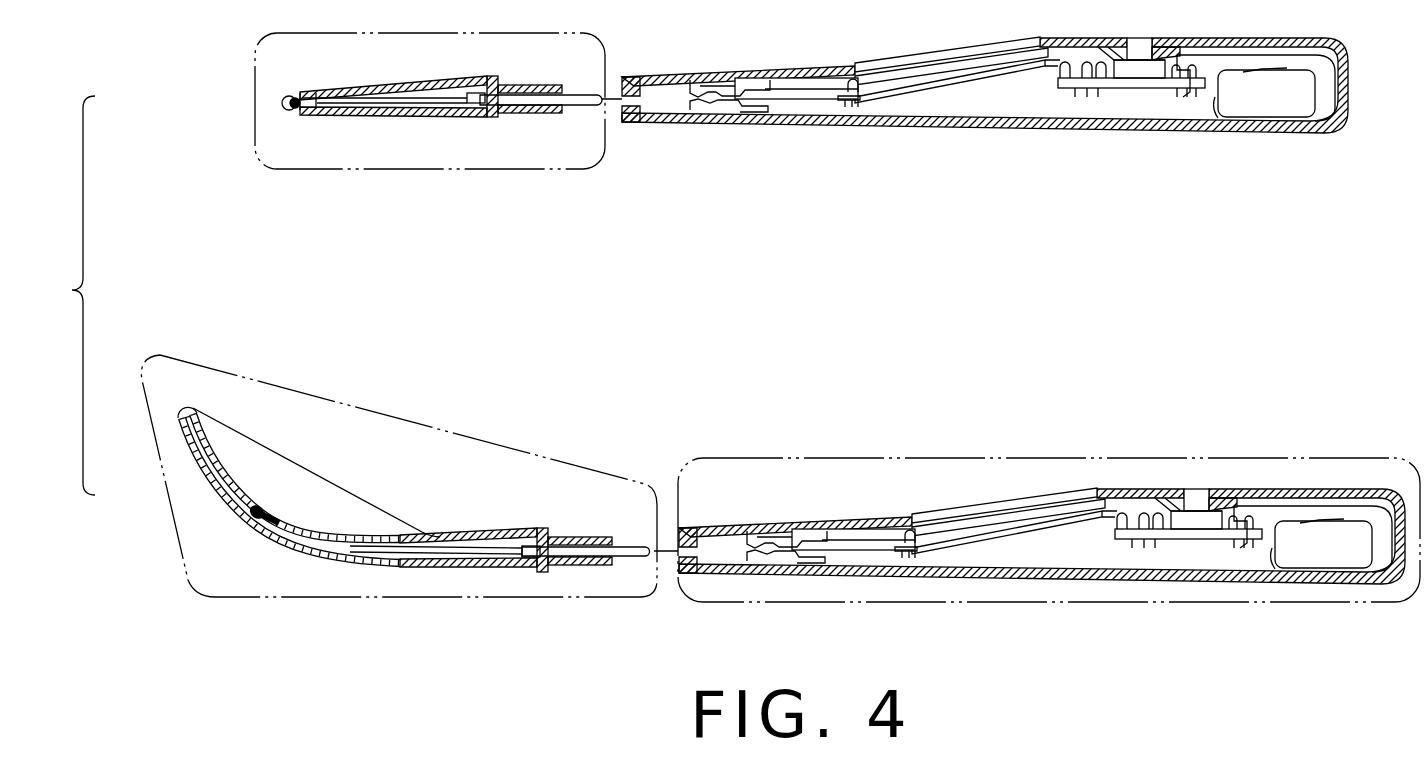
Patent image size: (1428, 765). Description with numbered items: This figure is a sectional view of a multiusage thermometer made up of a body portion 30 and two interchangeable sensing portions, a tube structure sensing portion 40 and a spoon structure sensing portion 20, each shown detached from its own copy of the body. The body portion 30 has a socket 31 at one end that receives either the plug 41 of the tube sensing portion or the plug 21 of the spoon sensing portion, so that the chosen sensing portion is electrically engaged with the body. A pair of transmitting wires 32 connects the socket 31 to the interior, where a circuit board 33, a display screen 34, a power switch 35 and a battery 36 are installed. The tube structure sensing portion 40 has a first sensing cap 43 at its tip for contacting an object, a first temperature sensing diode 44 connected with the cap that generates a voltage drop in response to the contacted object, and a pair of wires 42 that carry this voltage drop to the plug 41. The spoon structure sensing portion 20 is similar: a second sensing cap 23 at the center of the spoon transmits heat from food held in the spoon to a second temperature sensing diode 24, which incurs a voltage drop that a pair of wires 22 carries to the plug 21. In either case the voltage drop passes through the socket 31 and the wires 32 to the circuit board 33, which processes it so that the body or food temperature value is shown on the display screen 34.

The spoon structure sensing portion 20 is at (457, 422).
The plug 21 is at (634, 548).
The pair of wires 22 is at (466, 552).
The second sensing cap 23 is at (278, 512).
The second temperature sensing diode 24 is at (246, 514).
The body portion 30 is at (1050, 462).
The socket 31 is at (838, 513).
The transmitting wires 32 is at (803, 556).
The circuit board 33 is at (1188, 588).
The display screen 34 is at (1008, 508).
The power switch 35 is at (1187, 469).
The battery 36 is at (1321, 583).
The tube structure sensing portion 40 is at (491, 170).
The plug 41 is at (578, 103).
The pair of wires 42 is at (378, 101).
The first sensing cap 43 is at (287, 108).
The first temperature sensing diode 44 is at (299, 97).